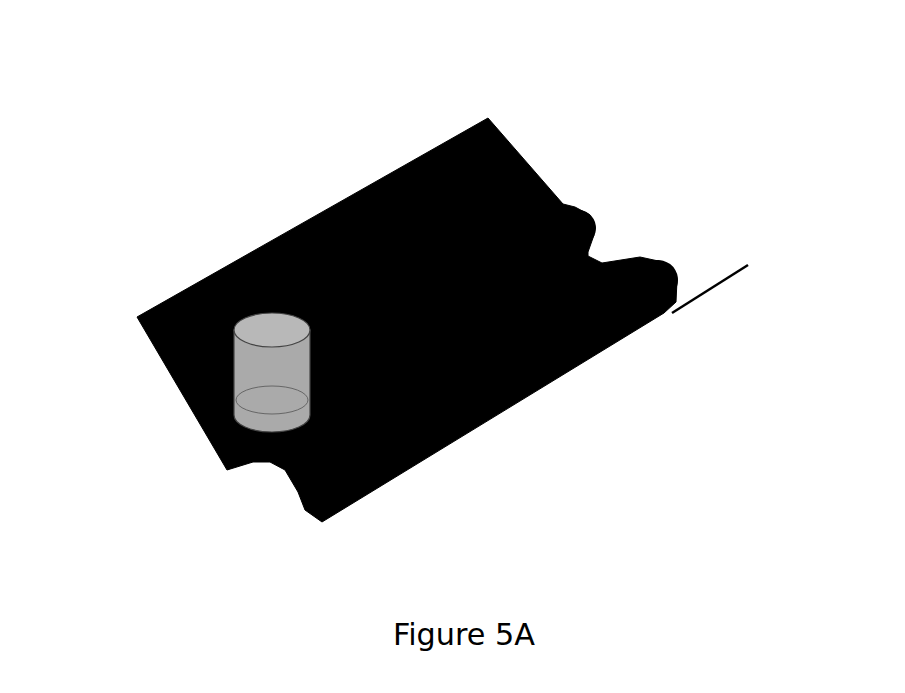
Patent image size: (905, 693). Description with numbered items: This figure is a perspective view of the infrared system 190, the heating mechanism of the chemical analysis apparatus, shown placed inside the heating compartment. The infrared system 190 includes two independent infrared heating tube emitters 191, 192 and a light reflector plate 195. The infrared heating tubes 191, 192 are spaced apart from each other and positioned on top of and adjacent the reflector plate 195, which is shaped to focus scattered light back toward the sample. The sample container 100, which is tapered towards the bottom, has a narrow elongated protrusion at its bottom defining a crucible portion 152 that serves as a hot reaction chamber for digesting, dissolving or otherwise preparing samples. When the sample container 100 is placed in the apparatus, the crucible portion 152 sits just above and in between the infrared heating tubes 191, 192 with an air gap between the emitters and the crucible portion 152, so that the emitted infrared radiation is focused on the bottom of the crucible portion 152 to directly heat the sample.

The infrared system 190 is at (201, 40).
The light reflector plate 195 is at (490, 118).
The infrared heating tube emitter 192 is at (571, 202).
The infrared heating tube emitter 191 is at (667, 258).
The sample container 100 is at (268, 313).
The crucible portion 152 is at (258, 387).